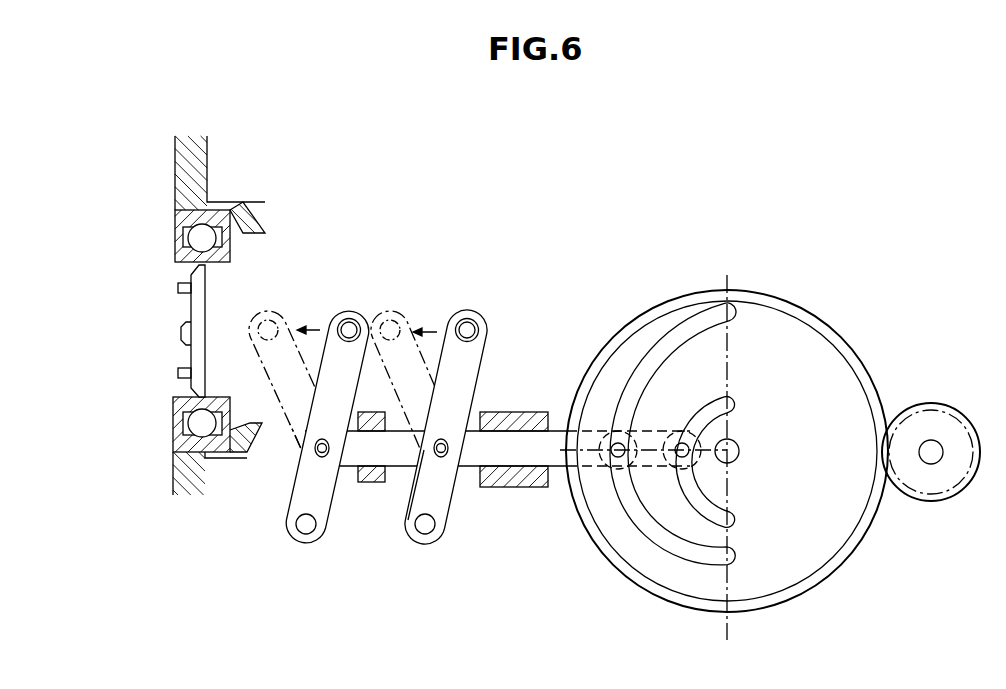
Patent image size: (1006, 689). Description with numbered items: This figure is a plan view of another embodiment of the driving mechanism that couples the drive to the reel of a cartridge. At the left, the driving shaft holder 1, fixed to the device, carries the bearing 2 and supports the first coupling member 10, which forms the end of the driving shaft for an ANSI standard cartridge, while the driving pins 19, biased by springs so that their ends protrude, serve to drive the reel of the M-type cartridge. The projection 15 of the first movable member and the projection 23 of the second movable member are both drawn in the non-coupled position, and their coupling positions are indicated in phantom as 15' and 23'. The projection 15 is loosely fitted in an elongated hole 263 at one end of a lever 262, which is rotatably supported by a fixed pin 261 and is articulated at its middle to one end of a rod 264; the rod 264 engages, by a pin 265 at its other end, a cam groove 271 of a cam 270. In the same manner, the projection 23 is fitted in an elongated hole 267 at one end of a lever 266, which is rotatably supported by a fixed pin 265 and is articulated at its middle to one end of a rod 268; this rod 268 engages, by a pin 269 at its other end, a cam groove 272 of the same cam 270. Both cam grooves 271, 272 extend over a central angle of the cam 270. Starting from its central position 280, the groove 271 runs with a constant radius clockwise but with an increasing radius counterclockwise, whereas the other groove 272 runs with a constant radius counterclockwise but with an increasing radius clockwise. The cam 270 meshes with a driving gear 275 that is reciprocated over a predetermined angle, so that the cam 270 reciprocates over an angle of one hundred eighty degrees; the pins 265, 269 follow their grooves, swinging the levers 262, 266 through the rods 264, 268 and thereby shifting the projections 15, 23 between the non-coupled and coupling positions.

The driving shaft holder 1 is at (197, 162).
The bearing 2 is at (190, 240).
The first coupling member 10 is at (186, 352).
The driving pin 19 is at (177, 292).
The projection 23 is at (327, 405).
The coupling position of projection 23' is at (295, 367).
The elongated hole 267 is at (358, 325).
The projection 15 is at (472, 404).
The coupling position of projection 15' is at (415, 365).
The elongated hole 263 is at (466, 322).
The lever 262 is at (470, 385).
The pin 265 is at (307, 530).
The fixed pin 261 is at (427, 530).
The lever 266 is at (322, 395).
The rod 268 is at (398, 458).
The rod 264 is at (531, 462).
The pin 269 is at (613, 444).
The central position 280 is at (595, 508).
The cam groove 272 is at (665, 542).
The cam groove 271 is at (700, 525).
The cam 270 is at (810, 570).
The driving gear 275 is at (937, 437).